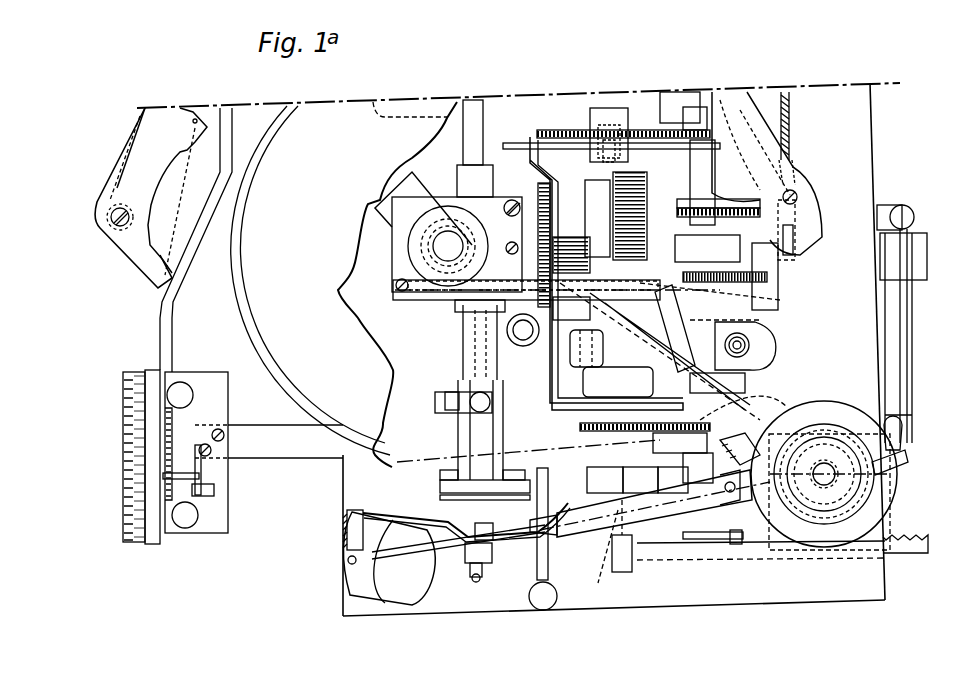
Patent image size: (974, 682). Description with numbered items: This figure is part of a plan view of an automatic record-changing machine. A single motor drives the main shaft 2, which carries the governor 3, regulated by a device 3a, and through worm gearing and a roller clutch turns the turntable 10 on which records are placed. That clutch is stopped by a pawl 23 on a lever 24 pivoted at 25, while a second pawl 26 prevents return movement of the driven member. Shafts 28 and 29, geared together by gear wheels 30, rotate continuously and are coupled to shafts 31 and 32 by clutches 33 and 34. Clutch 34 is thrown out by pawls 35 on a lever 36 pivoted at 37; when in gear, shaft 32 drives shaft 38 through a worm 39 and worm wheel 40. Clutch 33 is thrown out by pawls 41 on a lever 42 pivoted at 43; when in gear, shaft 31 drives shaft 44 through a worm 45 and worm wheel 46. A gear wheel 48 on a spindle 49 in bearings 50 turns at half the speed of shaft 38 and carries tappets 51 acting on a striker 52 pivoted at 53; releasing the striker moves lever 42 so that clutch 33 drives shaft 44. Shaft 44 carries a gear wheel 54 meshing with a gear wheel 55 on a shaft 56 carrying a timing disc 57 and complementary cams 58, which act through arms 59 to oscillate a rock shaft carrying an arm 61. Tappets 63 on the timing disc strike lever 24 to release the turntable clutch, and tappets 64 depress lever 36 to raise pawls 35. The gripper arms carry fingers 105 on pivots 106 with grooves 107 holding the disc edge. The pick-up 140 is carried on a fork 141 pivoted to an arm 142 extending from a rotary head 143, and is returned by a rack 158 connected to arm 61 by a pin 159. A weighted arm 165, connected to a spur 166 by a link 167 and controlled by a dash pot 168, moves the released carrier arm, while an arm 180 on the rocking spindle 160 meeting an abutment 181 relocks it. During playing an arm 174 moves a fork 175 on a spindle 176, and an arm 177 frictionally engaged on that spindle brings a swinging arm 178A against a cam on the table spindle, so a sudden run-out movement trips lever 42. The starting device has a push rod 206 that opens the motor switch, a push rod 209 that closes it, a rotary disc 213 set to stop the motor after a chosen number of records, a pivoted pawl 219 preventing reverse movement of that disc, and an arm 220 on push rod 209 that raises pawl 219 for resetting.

The main shaft 2 is at (475, 145).
The governor 3 is at (477, 403).
The governor speed regulating device 3a is at (557, 594).
The turntable 10 is at (270, 283).
The pawl 23 is at (500, 200).
The lever 24 is at (523, 193).
The pivot 25 is at (470, 340).
The second pawl 26 is at (420, 252).
The shaft 28 is at (405, 280).
The shaft 29 is at (562, 229).
The gear wheels 30 is at (530, 170).
The shaft 31 is at (780, 300).
The shaft 32 is at (691, 182).
The clutch 33 is at (623, 337).
The clutch 34 is at (640, 170).
The pawls 35 is at (650, 130).
The lever 36 is at (785, 246).
The pivot 37 is at (675, 328).
The shaft 38 is at (707, 123).
The worm 39 is at (712, 208).
The worm wheel 40 is at (700, 205).
The pawls 41 is at (555, 235).
The clutch lever 42 is at (530, 137).
The pivot 43 is at (497, 360).
The shaft 44 is at (757, 320).
The worm 45 is at (778, 290).
The worm wheel 46 is at (770, 276).
The gear wheel 48 is at (570, 132).
The spindle 49 is at (607, 150).
The bearings 50 is at (597, 110).
The tappets 51 is at (686, 132).
The striker 52 is at (563, 147).
The pivot 53 is at (635, 165).
The gear wheel 54 is at (787, 407).
The gear wheel 55 is at (620, 428).
The shaft 56 is at (640, 480).
The timing disc 57 is at (731, 384).
The complementary cams 58 is at (470, 458).
The arms 59 is at (682, 437).
The arm 61 is at (720, 533).
The tappets 63 is at (563, 420).
The tappets 64 is at (630, 380).
The fingers 105 is at (122, 193).
The pivots 106 is at (112, 221).
The grooves 107 is at (177, 191).
The sound box or electric pick-up 140 is at (377, 570).
The fork 141 is at (548, 547).
The arm 142 is at (670, 520).
The rotary head 143 is at (870, 495).
The rack 158 is at (918, 550).
The pin or lug 159 is at (738, 545).
The spindle 160 is at (700, 540).
The weighted arm 165 is at (912, 418).
The spur 166 is at (907, 462).
The link 167 is at (905, 448).
The dash pot 168 is at (882, 210).
The arm 174 is at (750, 413).
The fork 175 is at (750, 345).
The spindle 176 is at (760, 350).
The arm 177 is at (450, 296).
The swinging arm 178A is at (440, 287).
The arm 180 is at (604, 558).
The abutment 181 is at (632, 572).
The push rod 206 is at (182, 383).
The push rod 209 is at (187, 528).
The rotary disc 213 is at (128, 436).
The pivoted pawl 219 is at (200, 476).
The arm 220 is at (205, 492).